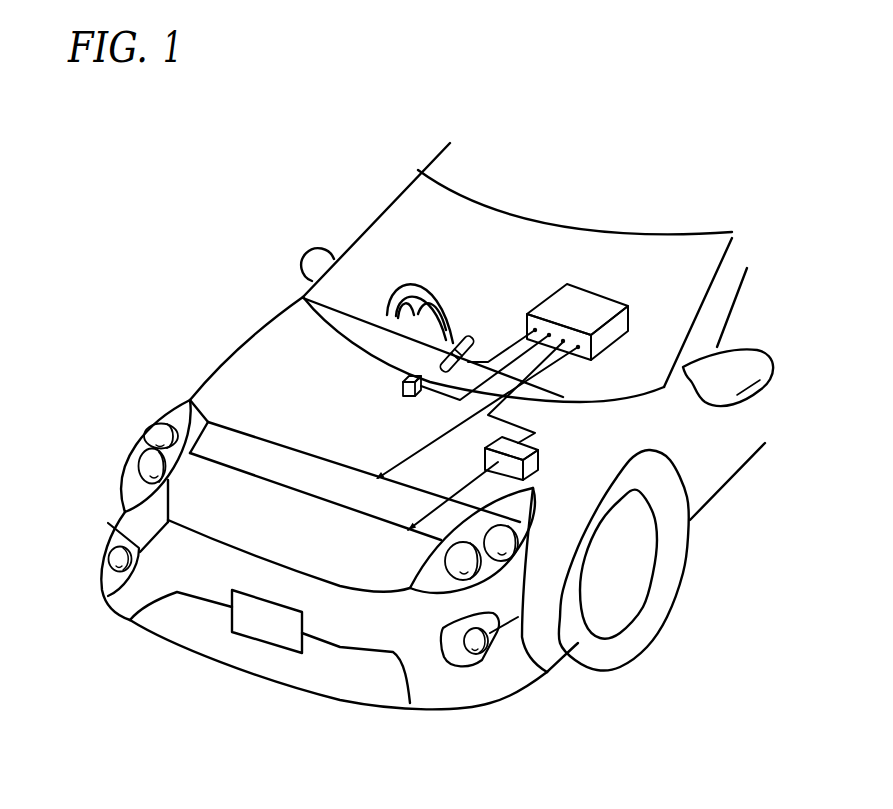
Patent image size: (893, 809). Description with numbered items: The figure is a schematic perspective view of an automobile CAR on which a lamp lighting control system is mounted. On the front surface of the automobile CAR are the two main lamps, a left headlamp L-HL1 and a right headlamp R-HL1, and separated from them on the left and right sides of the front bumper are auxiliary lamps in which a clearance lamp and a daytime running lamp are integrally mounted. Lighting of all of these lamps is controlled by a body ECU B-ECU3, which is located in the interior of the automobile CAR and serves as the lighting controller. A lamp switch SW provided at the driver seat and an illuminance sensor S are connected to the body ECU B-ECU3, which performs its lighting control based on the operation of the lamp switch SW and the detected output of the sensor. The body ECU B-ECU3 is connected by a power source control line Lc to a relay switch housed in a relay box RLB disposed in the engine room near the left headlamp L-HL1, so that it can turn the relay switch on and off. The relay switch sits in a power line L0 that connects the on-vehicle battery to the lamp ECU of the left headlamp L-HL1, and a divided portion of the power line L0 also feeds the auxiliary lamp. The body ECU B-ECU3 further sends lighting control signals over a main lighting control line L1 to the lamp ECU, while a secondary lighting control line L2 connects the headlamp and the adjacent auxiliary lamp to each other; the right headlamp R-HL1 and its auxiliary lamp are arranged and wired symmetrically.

The automobile CAR is at (421, 161).
The steering sensor S is at (412, 374).
The lamp switch SW is at (468, 337).
The body ECU B-ECU3 is at (591, 303).
The power source control line Lc is at (516, 417).
The main lighting control line L1 is at (376, 476).
The power line L0 is at (322, 500).
The secondary lighting control line L2 is at (170, 501).
The right headlamp R-HL1 is at (168, 408).
The relay box RLB is at (540, 464).
The left headlamp L-HL1 is at (525, 550).